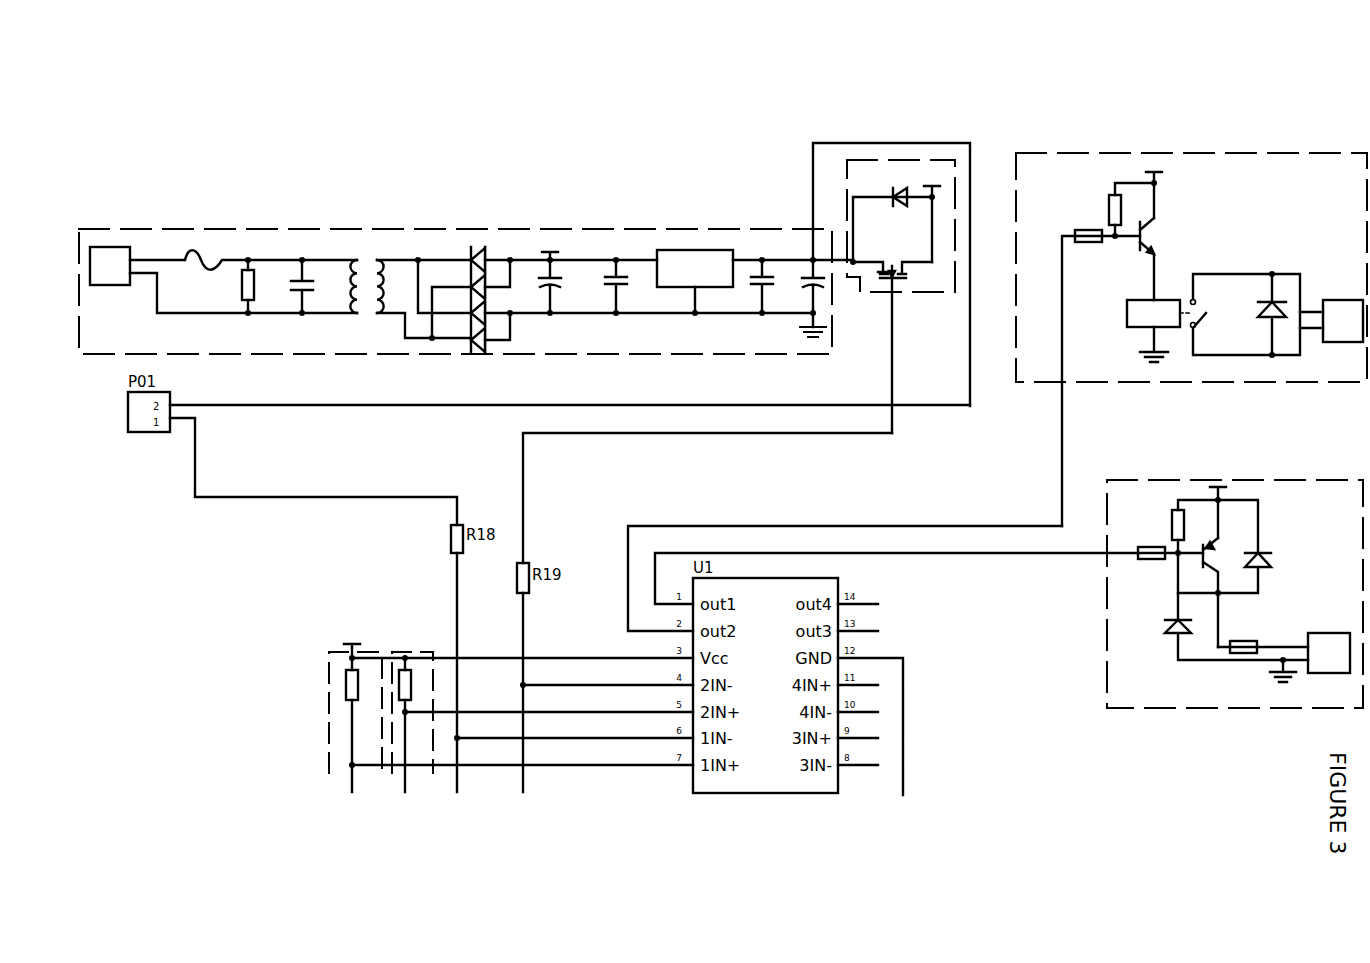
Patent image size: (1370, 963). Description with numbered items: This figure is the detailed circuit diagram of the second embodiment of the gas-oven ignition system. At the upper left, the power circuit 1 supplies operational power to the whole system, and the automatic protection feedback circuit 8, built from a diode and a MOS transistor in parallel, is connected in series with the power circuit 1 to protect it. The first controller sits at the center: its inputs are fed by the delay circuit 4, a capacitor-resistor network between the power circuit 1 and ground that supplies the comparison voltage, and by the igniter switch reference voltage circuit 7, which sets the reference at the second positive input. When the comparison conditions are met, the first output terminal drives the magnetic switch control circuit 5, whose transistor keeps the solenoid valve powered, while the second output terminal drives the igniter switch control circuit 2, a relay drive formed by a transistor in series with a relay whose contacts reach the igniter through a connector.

The power circuit 1 is at (523, 230).
The igniter switch control circuit 2 is at (1220, 153).
The delay circuit 4 is at (328, 760).
The magnetic switch control circuit 5 is at (1250, 480).
The igniter switch reference voltage circuit 7 is at (405, 652).
The automatic protection feedback circuit 8 is at (890, 160).